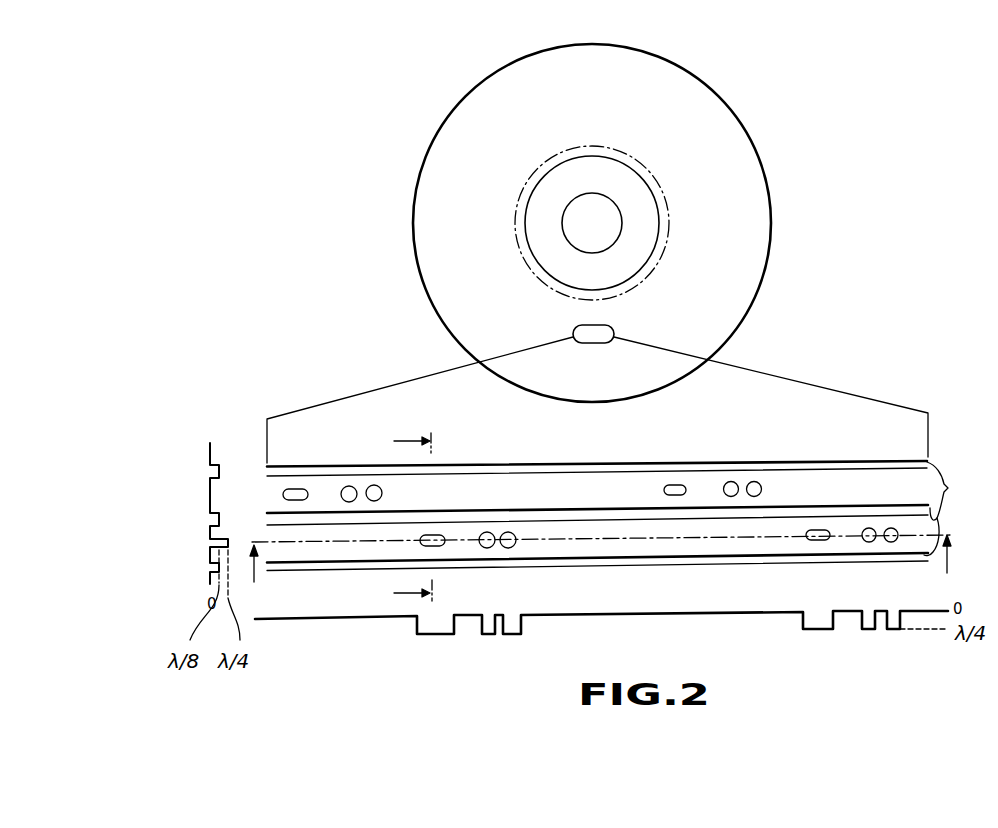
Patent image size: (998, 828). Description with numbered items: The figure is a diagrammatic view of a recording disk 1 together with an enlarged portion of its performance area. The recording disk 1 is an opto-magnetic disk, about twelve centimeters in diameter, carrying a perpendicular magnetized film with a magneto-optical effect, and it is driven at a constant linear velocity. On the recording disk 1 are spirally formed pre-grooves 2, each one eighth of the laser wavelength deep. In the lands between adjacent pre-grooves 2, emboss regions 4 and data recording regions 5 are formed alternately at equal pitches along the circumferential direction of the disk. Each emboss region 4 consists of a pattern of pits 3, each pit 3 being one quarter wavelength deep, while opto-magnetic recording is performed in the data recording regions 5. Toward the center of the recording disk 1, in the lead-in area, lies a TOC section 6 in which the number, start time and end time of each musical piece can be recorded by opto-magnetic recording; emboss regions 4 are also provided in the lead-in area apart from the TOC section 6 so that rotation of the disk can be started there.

The recording disk 1 is at (748, 137).
The pre-grooves 2 is at (605, 499).
The pits 3 is at (375, 486).
The emboss regions 4 is at (374, 485).
The data recording regions 5 is at (503, 477).
The TOC section 6 is at (667, 230).